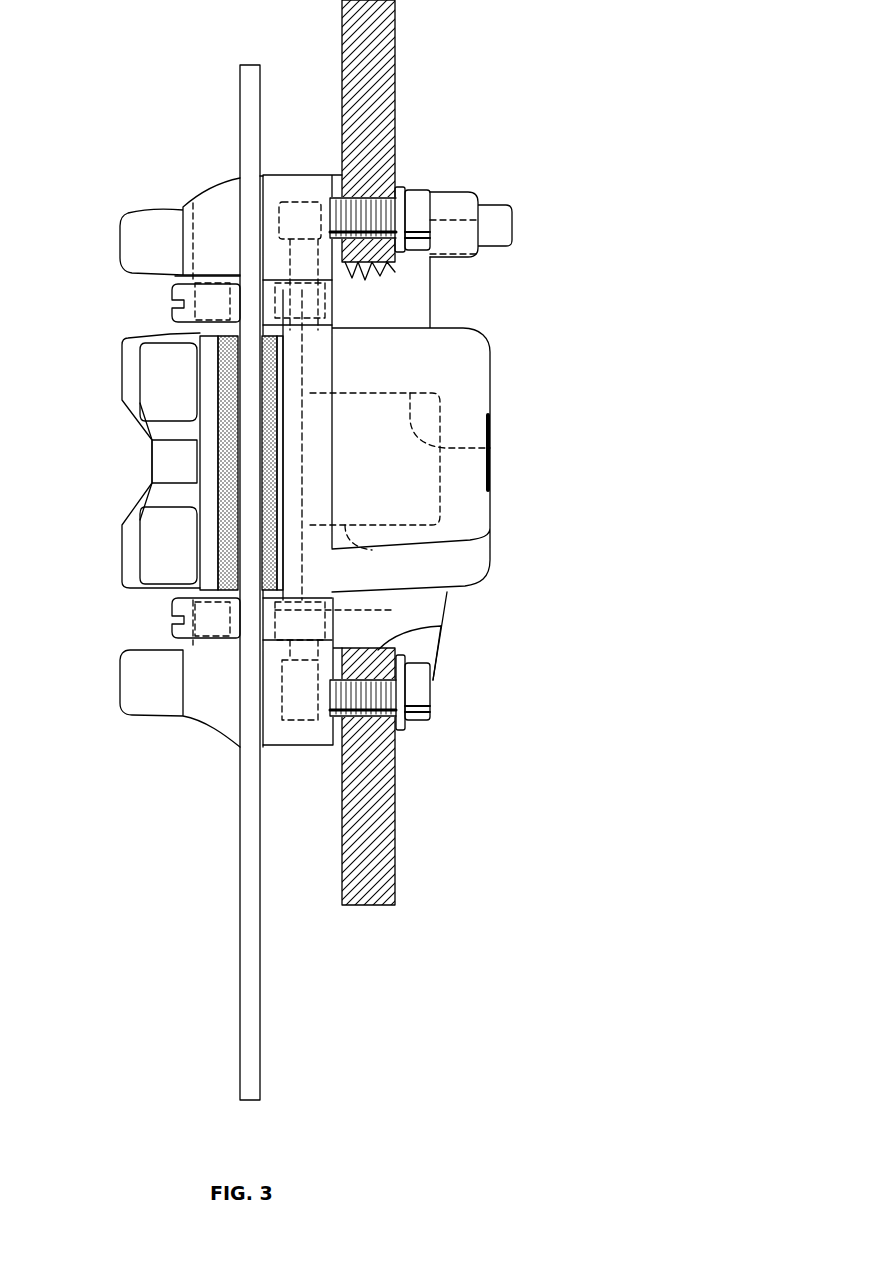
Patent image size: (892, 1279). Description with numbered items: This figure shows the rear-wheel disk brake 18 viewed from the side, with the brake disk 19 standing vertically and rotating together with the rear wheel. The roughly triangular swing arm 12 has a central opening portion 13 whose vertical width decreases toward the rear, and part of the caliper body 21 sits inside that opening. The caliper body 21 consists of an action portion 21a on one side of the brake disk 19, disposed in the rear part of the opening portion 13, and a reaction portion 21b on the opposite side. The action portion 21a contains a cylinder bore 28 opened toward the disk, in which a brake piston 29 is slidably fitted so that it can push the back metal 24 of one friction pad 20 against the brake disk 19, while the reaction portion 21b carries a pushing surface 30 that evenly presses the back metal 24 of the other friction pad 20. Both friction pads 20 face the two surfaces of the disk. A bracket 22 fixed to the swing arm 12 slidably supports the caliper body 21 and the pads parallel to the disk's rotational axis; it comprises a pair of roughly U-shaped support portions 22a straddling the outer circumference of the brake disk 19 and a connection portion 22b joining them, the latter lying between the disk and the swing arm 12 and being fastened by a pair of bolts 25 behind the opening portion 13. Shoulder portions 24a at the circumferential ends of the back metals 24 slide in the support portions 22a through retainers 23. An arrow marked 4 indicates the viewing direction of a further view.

The swing arm 12 is at (386, 830).
The opening portion 13 is at (380, 653).
The disk brake 18 is at (262, 947).
The brake disk 19 is at (250, 435).
The friction pads 20 is at (275, 505).
The caliper body 21 is at (492, 405).
The action portion 21a is at (457, 335).
The reaction portion 21b is at (127, 392).
The bracket 22 is at (222, 745).
The support portions 22a is at (213, 200).
The connection portion 22b is at (315, 415).
The retainers 23 is at (175, 320).
The back metals 24 is at (320, 432).
The shoulder portions 24a is at (292, 200).
The bolts 25 is at (418, 187).
The cylinder bore 28 is at (490, 450).
The brake piston 29 is at (372, 552).
The pushing surface 30 is at (205, 385).
The section view direction 4 is at (540, 460).